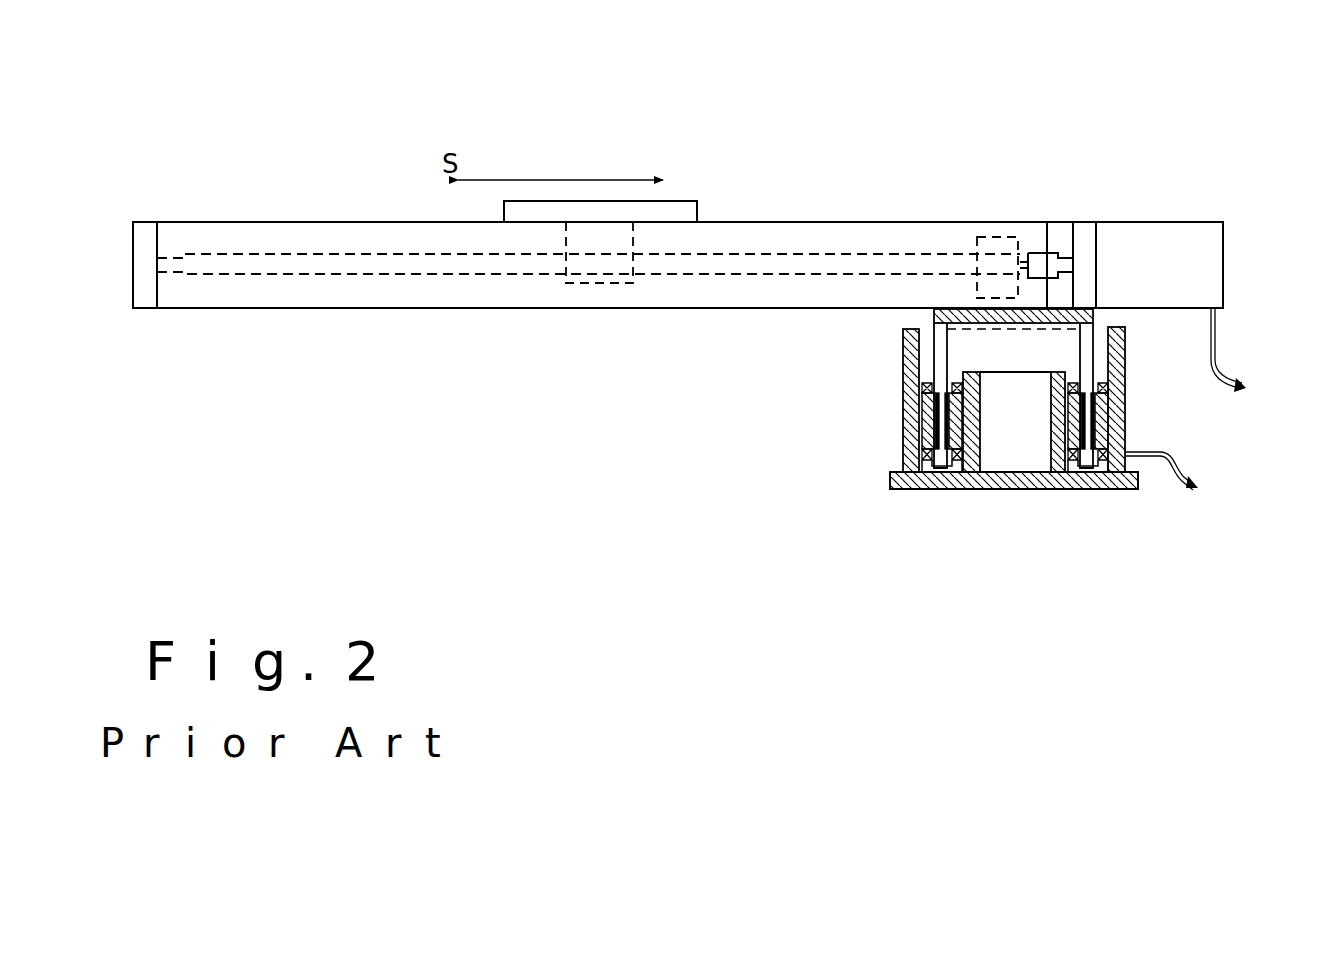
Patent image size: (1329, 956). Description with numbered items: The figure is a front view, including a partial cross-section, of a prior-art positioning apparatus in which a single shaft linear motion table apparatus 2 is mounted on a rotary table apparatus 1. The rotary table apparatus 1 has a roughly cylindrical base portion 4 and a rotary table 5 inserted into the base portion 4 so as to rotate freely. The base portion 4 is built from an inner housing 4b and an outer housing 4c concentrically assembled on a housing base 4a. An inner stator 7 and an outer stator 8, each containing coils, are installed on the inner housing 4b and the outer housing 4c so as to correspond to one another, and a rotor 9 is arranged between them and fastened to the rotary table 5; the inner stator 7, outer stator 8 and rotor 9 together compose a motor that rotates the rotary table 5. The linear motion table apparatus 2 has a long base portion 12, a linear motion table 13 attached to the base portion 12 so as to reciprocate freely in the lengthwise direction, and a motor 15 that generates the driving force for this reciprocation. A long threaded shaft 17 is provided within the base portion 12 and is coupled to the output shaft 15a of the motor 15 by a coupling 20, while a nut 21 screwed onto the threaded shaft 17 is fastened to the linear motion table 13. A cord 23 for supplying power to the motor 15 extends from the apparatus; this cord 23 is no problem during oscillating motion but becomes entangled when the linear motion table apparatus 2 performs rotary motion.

The rotary table apparatus 1 is at (983, 469).
The single shaft linear motion table apparatus 2 is at (316, 198).
The base portion 4 is at (1140, 496).
The housing base 4a is at (1088, 478).
The inner housing 4b is at (1038, 468).
The outer housing 4c is at (1118, 375).
The rotary table 5 is at (1098, 319).
The inner stator 7 is at (950, 366).
The outer stator 8 is at (927, 383).
The rotor 9 is at (932, 456).
The base portion 12 is at (400, 316).
The linear motion table 13 is at (592, 205).
The motor 15 is at (1148, 246).
The output shaft 15a is at (1062, 262).
The threaded shaft 17 is at (812, 262).
The coupling 20 is at (1042, 254).
The nut 21 is at (620, 246).
The cord 23 is at (1215, 365).